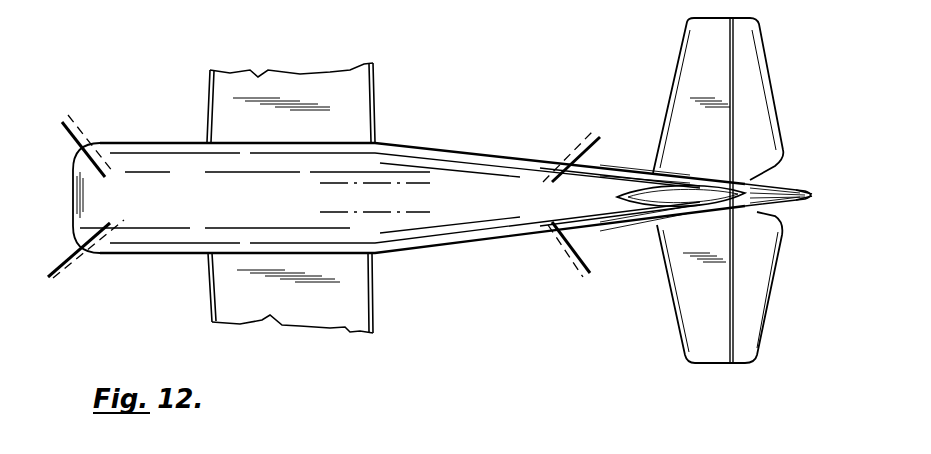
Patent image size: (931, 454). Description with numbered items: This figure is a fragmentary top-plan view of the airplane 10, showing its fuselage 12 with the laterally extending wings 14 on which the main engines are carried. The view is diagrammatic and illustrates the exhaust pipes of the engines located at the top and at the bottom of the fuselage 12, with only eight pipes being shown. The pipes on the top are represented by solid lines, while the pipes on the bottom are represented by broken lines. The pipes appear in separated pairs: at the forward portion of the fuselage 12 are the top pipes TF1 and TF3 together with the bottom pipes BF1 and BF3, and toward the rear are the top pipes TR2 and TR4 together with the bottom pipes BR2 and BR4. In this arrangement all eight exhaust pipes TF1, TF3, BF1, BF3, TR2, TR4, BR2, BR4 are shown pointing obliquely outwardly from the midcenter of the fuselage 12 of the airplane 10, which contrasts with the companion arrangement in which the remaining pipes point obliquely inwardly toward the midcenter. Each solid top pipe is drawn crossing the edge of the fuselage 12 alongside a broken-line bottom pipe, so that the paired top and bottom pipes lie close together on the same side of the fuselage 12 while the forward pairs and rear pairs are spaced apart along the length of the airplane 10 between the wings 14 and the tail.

The airplane 10 is at (450, 247).
The fuselage 12 is at (463, 172).
The wings 14 is at (368, 95).
The top forward exhaust pipe TF1 is at (76, 254).
The top forward exhaust pipe TF3 is at (84, 146).
The bottom forward exhaust pipe BF1 is at (80, 262).
The bottom forward exhaust pipe BF3 is at (90, 135).
The top rear exhaust pipe TR2 is at (577, 250).
The top rear exhaust pipe TR4 is at (588, 150).
The bottom rear exhaust pipe BR2 is at (558, 245).
The bottom rear exhaust pipe BR4 is at (573, 150).